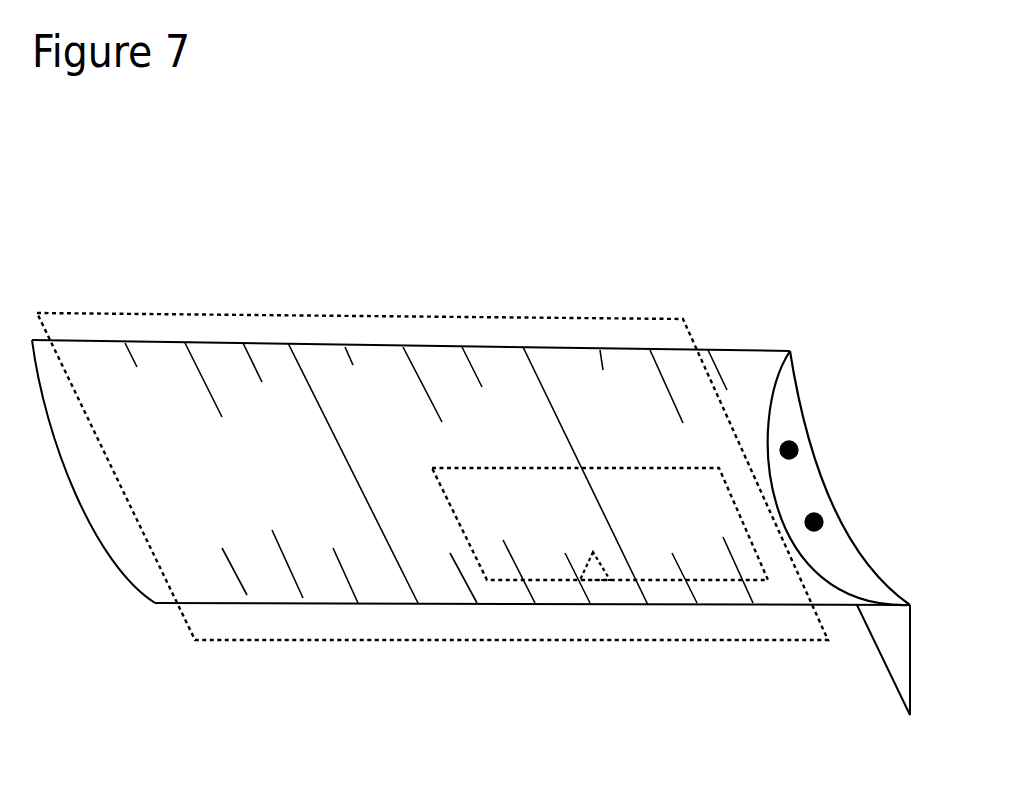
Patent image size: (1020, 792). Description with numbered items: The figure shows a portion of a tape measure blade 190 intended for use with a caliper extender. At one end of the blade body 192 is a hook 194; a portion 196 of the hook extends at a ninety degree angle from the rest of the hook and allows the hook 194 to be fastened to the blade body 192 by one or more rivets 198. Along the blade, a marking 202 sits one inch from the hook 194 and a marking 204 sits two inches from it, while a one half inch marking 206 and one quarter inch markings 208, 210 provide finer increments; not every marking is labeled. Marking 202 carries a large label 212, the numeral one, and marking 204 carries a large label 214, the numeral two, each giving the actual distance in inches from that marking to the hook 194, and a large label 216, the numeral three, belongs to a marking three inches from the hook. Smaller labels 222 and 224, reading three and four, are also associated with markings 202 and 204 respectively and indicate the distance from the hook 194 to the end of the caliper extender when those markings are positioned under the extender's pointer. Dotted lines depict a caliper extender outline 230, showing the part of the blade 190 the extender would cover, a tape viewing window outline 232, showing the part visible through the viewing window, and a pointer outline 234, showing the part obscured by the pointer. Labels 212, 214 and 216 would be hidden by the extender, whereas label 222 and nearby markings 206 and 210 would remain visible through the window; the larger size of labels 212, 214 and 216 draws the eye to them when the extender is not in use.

The tape measure blade 190 is at (483, 221).
The blade body 192 is at (107, 510).
The hook 194 is at (874, 640).
The portion of hook 196 is at (815, 483).
The rivets 198 is at (797, 448).
The marking 202 is at (523, 350).
The marking 204 is at (290, 350).
The one half inch marking 206 is at (535, 603).
The one quarter inch marking 208 is at (477, 603).
The one quarter inch marking 210 is at (590, 603).
The label 212 is at (630, 408).
The label 214 is at (400, 407).
The label 216 is at (170, 410).
The label 222 is at (545, 492).
The label 224 is at (302, 513).
The caliper extender outline 230 is at (628, 318).
The tape viewing window outline 232 is at (458, 520).
The pointer outline 234 is at (593, 552).